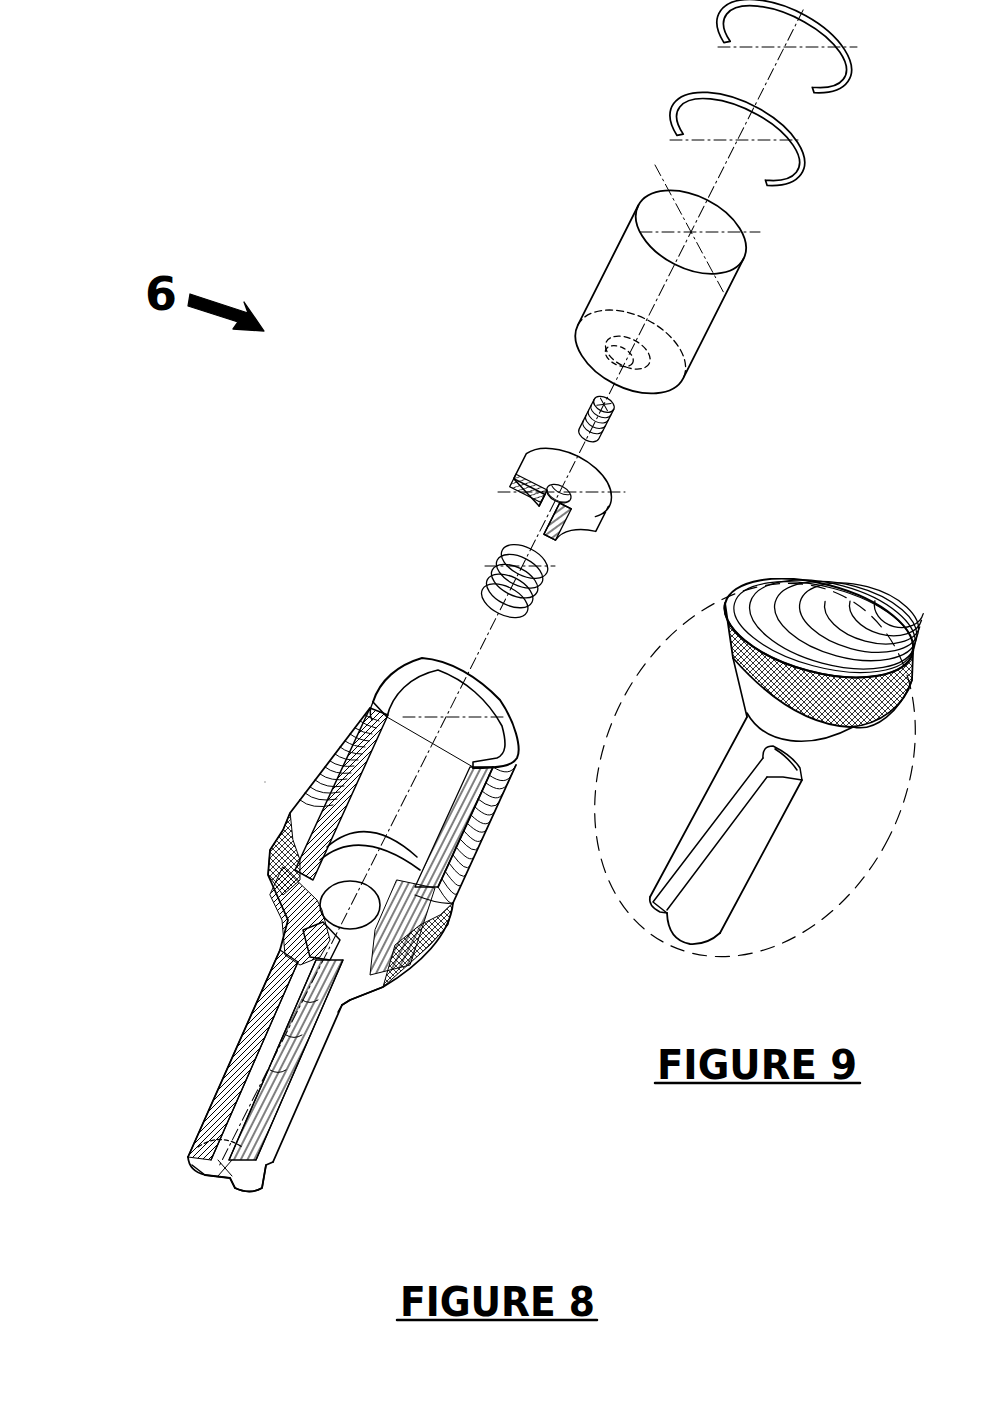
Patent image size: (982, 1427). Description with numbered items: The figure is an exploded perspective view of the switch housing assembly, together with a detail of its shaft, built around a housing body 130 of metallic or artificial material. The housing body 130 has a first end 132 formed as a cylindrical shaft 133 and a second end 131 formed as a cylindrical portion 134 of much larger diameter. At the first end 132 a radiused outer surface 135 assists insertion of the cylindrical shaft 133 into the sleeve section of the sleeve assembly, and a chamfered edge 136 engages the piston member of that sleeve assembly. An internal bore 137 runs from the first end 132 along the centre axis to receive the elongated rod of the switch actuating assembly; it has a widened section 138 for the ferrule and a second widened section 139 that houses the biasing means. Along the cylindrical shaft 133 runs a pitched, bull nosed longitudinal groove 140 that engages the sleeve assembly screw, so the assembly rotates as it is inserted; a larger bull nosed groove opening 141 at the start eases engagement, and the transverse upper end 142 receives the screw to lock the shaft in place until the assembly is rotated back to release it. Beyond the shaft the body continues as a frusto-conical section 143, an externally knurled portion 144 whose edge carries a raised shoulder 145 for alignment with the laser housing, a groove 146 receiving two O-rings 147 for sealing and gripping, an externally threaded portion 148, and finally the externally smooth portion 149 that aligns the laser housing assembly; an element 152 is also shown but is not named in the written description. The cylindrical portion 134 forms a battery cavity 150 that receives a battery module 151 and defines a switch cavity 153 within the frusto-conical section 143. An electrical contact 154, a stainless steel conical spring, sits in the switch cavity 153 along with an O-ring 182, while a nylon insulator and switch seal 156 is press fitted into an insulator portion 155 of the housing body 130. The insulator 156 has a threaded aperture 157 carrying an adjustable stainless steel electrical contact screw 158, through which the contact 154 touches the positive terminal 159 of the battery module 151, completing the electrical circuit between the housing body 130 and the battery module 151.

In FIG. 8, the housing body 130 is at (265, 782).
In FIG. 8, the second end 131 is at (430, 660).
In FIG. 8, the first end 132 is at (194, 1183).
In FIG. 9, the first end 132 is at (672, 944).
In FIG. 8, the cylindrical shaft 133 is at (212, 1082).
In FIG. 9, the cylindrical shaft 133 is at (747, 893).
In FIG. 8, the cylindrical portion 134 is at (487, 870).
In FIG. 9, the cylindrical portion 134 is at (820, 639).
In FIG. 8, the radiused outer surface 135 is at (192, 1174).
In FIG. 8, the chamfered edge 136 is at (213, 1187).
In FIG. 8, the internal bore 137 is at (218, 1128).
In FIG. 8, the widened section 138 is at (265, 1080).
In FIG. 8, the second widened section 139 is at (300, 1045).
In FIG. 8, the longitudinal groove 140 is at (290, 1143).
In FIG. 9, the longitudinal groove 140 is at (737, 825).
In FIG. 8, the bull nosed groove opening 141 is at (268, 1196).
In FIG. 9, the bull nosed groove opening 141 is at (652, 915).
In FIG. 8, the upper end 142 is at (354, 1015).
In FIG. 9, the upper end 142 is at (800, 790).
In FIG. 8, the frusto-conical section 143 is at (372, 992).
In FIG. 8, the externally knurled portion 144 is at (275, 853).
In FIG. 8, the raised shoulder 145 is at (440, 945).
In FIG. 8, the groove 146 is at (430, 918).
In FIG. 8, the O-rings 147 is at (848, 90).
In FIG. 8, the externally threaded portion 148 is at (332, 742).
In FIG. 8, the externally smooth portion 149 is at (368, 688).
In FIG. 8, the battery cavity 150 is at (375, 768).
In FIG. 8, the battery module 151 is at (606, 262).
In FIG. 8, the external threads 152 is at (478, 850).
In FIG. 8, the switch cavity 153 is at (400, 968).
In FIG. 8, the electrical contact 154 is at (490, 590).
In FIG. 8, the insulator portion 155 is at (330, 878).
In FIG. 8, the nylon insulator and switch seal 156 is at (514, 470).
In FIG. 8, the threaded aperture 157 is at (548, 470).
In FIG. 8, the adjustable electrical contact screw 158 is at (578, 407).
In FIG. 8, the positive terminal 159 is at (650, 377).
In FIG. 8, the O-ring 182 is at (312, 955).